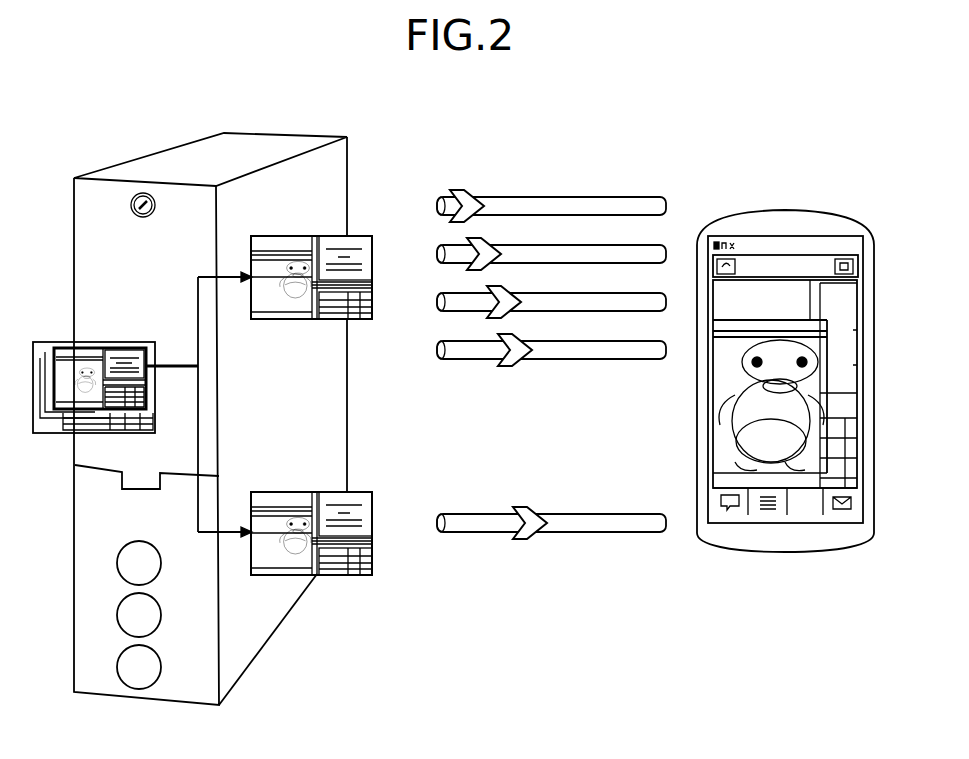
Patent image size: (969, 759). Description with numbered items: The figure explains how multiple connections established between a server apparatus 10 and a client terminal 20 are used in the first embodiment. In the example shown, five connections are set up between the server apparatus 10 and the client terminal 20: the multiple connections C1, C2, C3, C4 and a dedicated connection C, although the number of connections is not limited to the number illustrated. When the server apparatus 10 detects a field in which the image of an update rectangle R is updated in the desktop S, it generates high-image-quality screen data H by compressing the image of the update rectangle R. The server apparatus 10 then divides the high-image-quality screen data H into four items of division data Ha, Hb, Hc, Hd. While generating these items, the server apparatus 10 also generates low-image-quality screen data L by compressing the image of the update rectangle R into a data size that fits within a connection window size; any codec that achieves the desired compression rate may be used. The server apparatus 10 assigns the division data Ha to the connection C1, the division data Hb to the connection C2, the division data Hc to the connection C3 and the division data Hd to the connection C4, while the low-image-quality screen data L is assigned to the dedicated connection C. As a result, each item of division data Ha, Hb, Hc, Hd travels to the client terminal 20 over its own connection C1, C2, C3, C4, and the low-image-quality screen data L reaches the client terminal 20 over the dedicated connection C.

The server apparatus 10 is at (295, 133).
The client terminal 20 is at (786, 208).
The desktop S is at (52, 341).
The update rectangle R is at (63, 422).
The high-image-quality screen data H is at (302, 235).
The division data Ha is at (270, 247).
The division data Hb is at (358, 247).
The division data Hc is at (273, 318).
The division data Hd is at (334, 317).
The low-image-quality screen data L is at (353, 577).
The connection C1 is at (617, 197).
The connection C2 is at (617, 245).
The connection C3 is at (617, 293).
The connection C4 is at (617, 341).
The dedicated connection C is at (617, 515).